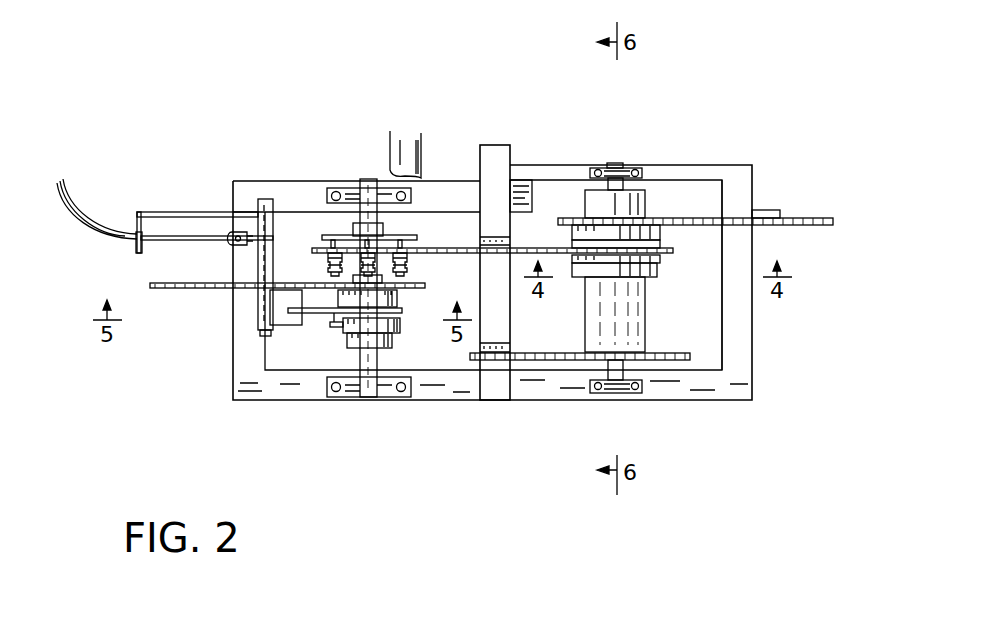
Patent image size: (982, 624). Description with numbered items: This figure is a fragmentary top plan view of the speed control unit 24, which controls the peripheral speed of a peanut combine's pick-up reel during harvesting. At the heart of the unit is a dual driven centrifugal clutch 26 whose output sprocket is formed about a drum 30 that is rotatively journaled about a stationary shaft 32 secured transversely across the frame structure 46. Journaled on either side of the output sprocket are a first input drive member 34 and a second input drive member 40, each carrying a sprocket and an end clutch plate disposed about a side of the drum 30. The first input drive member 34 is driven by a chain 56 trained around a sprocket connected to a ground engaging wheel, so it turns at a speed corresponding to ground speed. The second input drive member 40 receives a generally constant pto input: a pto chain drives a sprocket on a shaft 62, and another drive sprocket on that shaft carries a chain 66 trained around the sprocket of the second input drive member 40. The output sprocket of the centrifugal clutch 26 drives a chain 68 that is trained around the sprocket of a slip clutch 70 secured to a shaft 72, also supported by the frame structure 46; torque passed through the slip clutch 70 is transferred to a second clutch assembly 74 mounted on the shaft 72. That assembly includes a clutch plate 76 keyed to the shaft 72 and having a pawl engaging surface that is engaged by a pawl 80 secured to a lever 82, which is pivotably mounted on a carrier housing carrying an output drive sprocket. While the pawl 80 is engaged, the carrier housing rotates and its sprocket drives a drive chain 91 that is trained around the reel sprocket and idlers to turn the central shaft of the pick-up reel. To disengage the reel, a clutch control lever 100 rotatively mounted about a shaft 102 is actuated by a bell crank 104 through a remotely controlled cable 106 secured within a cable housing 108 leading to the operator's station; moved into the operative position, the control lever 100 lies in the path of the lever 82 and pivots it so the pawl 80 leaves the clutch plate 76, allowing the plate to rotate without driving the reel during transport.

The speed control unit 24 is at (535, 55).
The dual driven centrifugal clutch 26 is at (700, 255).
The drum 30 is at (660, 275).
The stationary shaft 32 is at (640, 388).
The first input drive member 34 is at (645, 197).
The second input drive member 40 is at (645, 330).
The frame structure 46 is at (573, 167).
The chain 56 is at (795, 217).
The shaft 62 is at (428, 150).
The chain 66 is at (555, 360).
The chain 68 is at (545, 248).
The slip clutch 70 is at (450, 212).
The shaft 72 is at (358, 220).
The second clutch assembly 74 is at (430, 328).
The clutch plate 76 is at (398, 328).
The pawl 80 is at (345, 340).
The lever 82 is at (328, 324).
The drive chain 91 is at (205, 283).
The clutch control lever 100 is at (290, 318).
The shaft 102 is at (263, 303).
The bell crank 104 is at (248, 232).
The cable 106 is at (193, 236).
The cable housing 108 is at (112, 240).